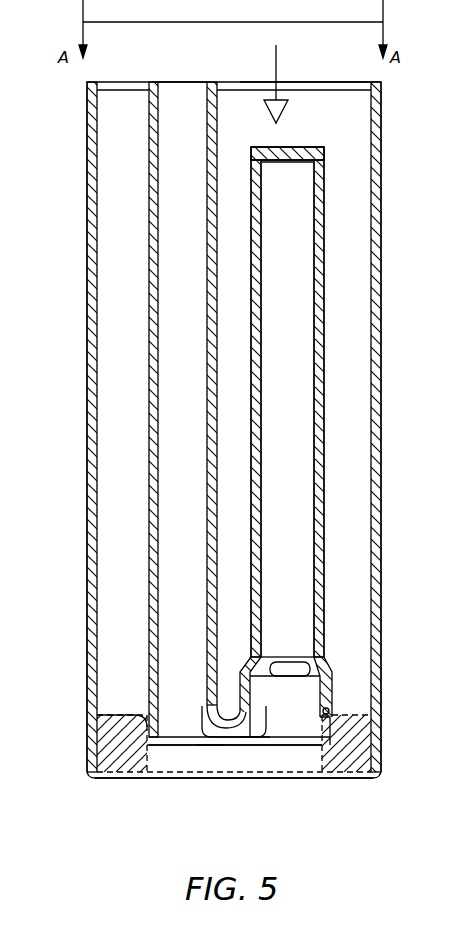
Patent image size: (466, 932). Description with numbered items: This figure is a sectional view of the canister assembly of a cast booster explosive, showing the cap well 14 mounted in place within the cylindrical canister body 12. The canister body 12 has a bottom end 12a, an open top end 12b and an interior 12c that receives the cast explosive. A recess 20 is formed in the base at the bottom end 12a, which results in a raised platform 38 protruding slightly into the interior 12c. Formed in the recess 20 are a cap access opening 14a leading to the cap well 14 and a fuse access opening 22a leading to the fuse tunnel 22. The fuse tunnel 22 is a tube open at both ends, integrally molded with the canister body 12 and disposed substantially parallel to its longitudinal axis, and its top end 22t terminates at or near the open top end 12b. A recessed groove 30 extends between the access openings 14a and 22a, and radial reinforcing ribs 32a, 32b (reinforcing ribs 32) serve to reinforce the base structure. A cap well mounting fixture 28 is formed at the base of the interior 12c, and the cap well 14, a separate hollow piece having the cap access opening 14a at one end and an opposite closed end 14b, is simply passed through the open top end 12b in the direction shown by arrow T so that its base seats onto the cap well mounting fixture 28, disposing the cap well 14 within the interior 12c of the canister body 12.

The canister body 12 is at (392, 414).
The bottom end 12a is at (279, 792).
The top end 12b is at (287, 70).
The interior 12c is at (232, 275).
The cap well 14 is at (324, 458).
The cap access opening 14a is at (288, 746).
The closed end 14b is at (300, 146).
The recess 20 is at (235, 758).
The fuse tunnel 22 is at (148, 426).
The fuse access opening 22a is at (172, 746).
The top end 22t is at (178, 82).
The cap well mounting fixture 28 is at (313, 698).
The recessed groove 30 is at (240, 718).
The block 32 is at (462, 148).
The radial reinforcing rib 32a is at (118, 718).
The radial reinforcing rib 32b is at (347, 712).
The raised platform 38 is at (212, 748).
The arrow T is at (278, 98).